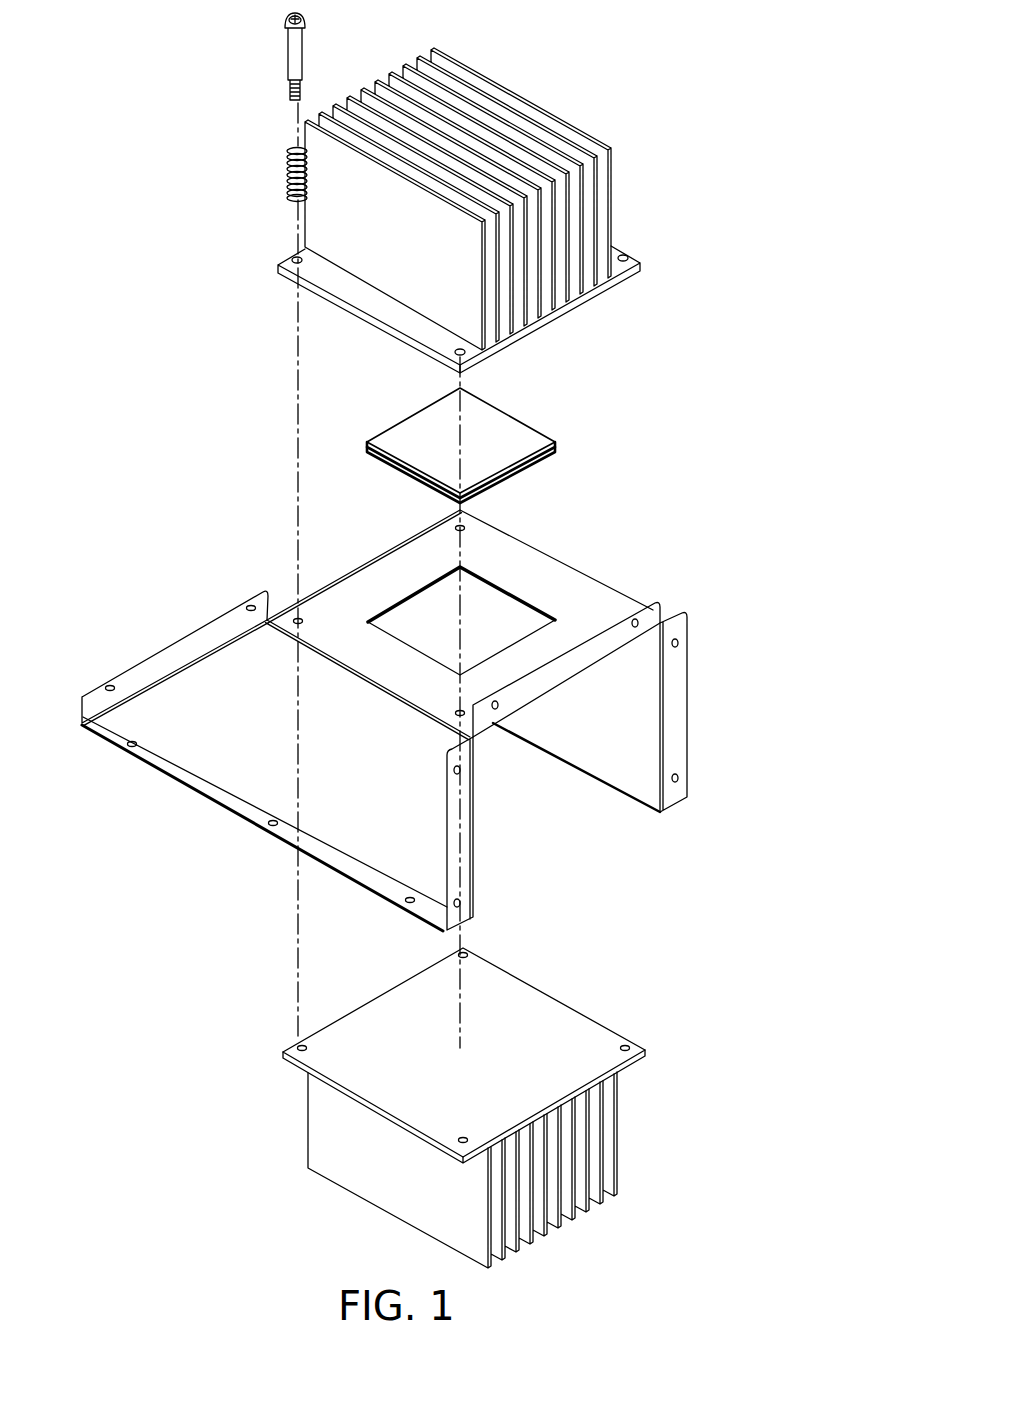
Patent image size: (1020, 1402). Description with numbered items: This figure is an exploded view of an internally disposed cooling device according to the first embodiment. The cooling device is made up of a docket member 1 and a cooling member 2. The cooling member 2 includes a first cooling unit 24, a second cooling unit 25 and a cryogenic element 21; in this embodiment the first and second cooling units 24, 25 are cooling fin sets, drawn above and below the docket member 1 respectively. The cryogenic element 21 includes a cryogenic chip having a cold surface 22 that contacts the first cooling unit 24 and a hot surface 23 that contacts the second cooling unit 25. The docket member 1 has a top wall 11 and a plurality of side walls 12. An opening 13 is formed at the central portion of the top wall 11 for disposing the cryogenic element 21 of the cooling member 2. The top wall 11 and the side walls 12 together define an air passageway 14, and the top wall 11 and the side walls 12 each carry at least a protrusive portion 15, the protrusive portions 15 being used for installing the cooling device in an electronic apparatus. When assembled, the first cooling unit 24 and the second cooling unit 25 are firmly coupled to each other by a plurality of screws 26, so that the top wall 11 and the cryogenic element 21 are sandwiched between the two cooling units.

The docket member 1 is at (680, 548).
The cooling member 2 is at (680, 318).
The top wall 11 is at (535, 576).
The side walls 12 is at (245, 758).
The opening 13 is at (485, 600).
The air passageway 14 is at (563, 817).
The protrusive portion 15 is at (677, 718).
The cryogenic element 21 is at (568, 436).
The cold surface 22 is at (421, 421).
The hot surface 23 is at (412, 478).
The first cooling unit 24 is at (313, 222).
The second cooling unit 25 is at (318, 1138).
The screws 26 is at (286, 56).